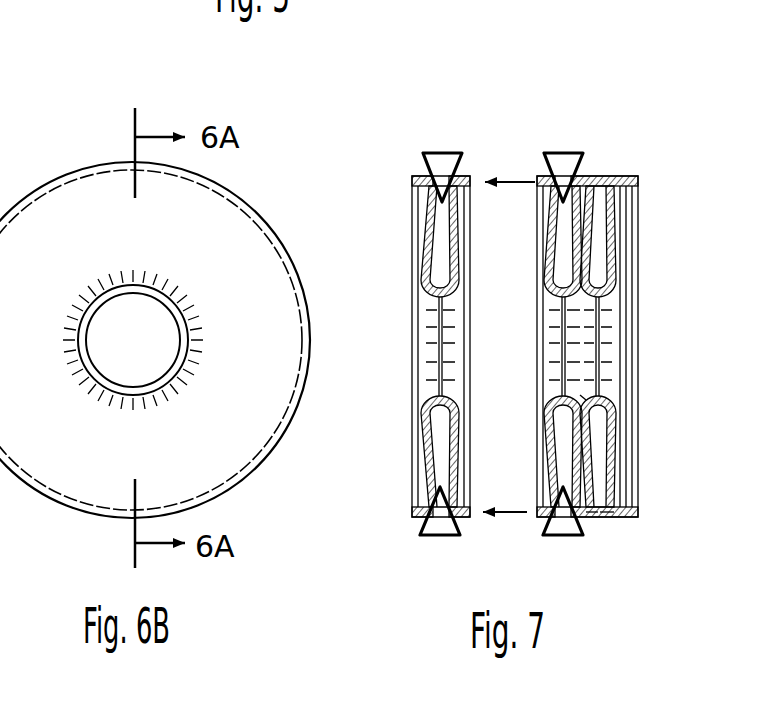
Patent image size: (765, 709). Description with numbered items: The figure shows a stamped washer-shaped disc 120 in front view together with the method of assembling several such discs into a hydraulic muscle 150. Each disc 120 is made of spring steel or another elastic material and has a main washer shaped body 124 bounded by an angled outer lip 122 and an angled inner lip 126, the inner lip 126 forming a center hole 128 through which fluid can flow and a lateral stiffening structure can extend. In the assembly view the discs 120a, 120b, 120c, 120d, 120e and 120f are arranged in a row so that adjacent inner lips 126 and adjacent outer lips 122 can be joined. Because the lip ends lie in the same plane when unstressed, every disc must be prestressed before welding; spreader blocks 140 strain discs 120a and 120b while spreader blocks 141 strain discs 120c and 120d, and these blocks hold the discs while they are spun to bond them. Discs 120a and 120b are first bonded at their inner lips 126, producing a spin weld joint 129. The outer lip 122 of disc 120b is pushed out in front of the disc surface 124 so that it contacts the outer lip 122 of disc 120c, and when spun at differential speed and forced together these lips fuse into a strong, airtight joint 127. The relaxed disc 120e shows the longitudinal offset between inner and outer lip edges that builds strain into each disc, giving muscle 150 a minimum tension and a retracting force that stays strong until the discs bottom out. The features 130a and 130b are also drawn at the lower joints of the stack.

In FIG. 6B, the washer shaped disc 120 is at (178, 303).
In FIG. 7, the disc 120a is at (473, 301).
In FIG. 7, the disc 120b is at (466, 168).
In FIG. 7, the disc 120c is at (544, 168).
In FIG. 7, the disc 120d is at (592, 168).
In FIG. 7, the disc 120e is at (609, 168).
In FIG. 7, the disc 120f is at (631, 170).
In FIG. 6B, the angled outer lip 122 is at (277, 450).
In FIG. 7, the angled outer lip 122 is at (472, 228).
In FIG. 6B, the main washer shaped body 124 is at (212, 445).
In FIG. 7, the main washer shaped body 124 is at (457, 272).
In FIG. 6B, the angled inner lip 126 is at (190, 317).
In FIG. 7, the joint 127 is at (593, 517).
In FIG. 6B, the hole 128 is at (143, 322).
In FIG. 7, the spin weld joint 129 is at (438, 400).
In FIG. 7, the first coupling portion 130a is at (587, 393).
In FIG. 7, the second coupling portion 130b is at (607, 517).
In FIG. 7, the spreader block 140 is at (436, 150).
In FIG. 7, the spreader block 141 is at (563, 151).
In FIG. 7, the hydraulic muscle 150 is at (497, 331).